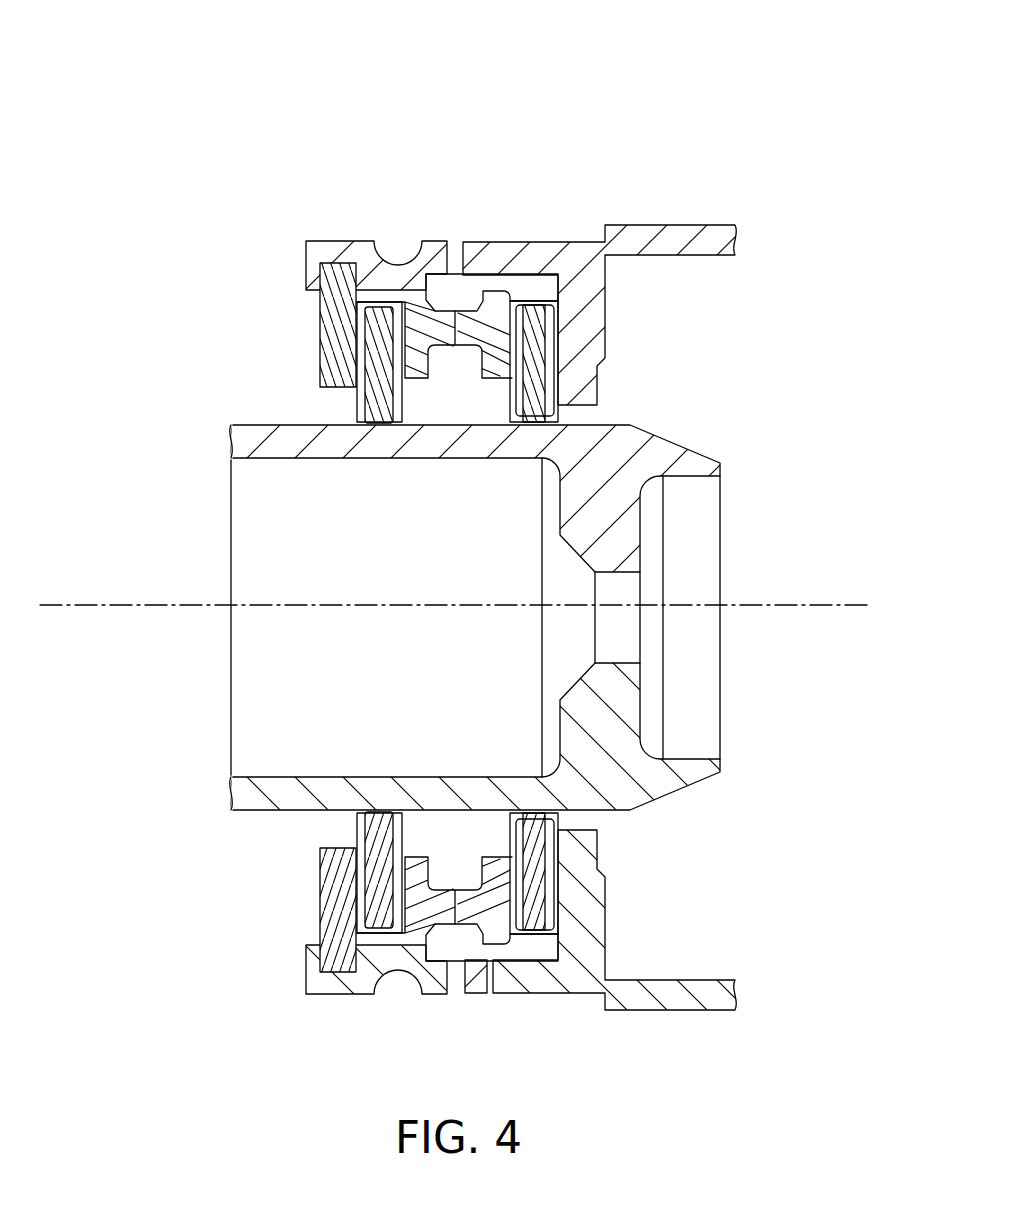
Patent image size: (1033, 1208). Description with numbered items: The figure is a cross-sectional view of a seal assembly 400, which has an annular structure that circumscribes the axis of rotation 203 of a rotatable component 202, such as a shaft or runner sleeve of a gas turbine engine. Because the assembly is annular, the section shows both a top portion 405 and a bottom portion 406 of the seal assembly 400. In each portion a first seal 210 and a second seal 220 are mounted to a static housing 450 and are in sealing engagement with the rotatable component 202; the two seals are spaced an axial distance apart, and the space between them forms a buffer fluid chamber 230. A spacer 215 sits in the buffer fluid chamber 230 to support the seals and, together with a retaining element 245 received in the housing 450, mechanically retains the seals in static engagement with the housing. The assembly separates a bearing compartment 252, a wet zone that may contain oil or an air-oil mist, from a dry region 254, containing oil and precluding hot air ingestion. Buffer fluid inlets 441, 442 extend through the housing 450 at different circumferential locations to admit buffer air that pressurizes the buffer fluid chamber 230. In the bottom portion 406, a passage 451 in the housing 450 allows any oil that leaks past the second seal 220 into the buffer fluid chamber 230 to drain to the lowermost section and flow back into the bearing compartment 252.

The seal assembly 400 is at (182, 82).
The rotatable component 202 is at (423, 447).
The axis of rotation 203 is at (185, 605).
The top portion 405 is at (135, 378).
The bottom portion 406 is at (135, 840).
The buffer fluid inlet 441 is at (462, 248).
The buffer fluid inlet 442 is at (458, 982).
The passage 451 is at (492, 980).
The housing 450 is at (583, 262).
The retaining element 245 is at (322, 318).
The first seal 210 is at (385, 405).
The spacer 215 is at (490, 295).
The buffer fluid chamber 230 is at (478, 301).
The second seal 220 is at (548, 413).
The region 254 is at (256, 363).
The bearing compartment 252 is at (710, 357).